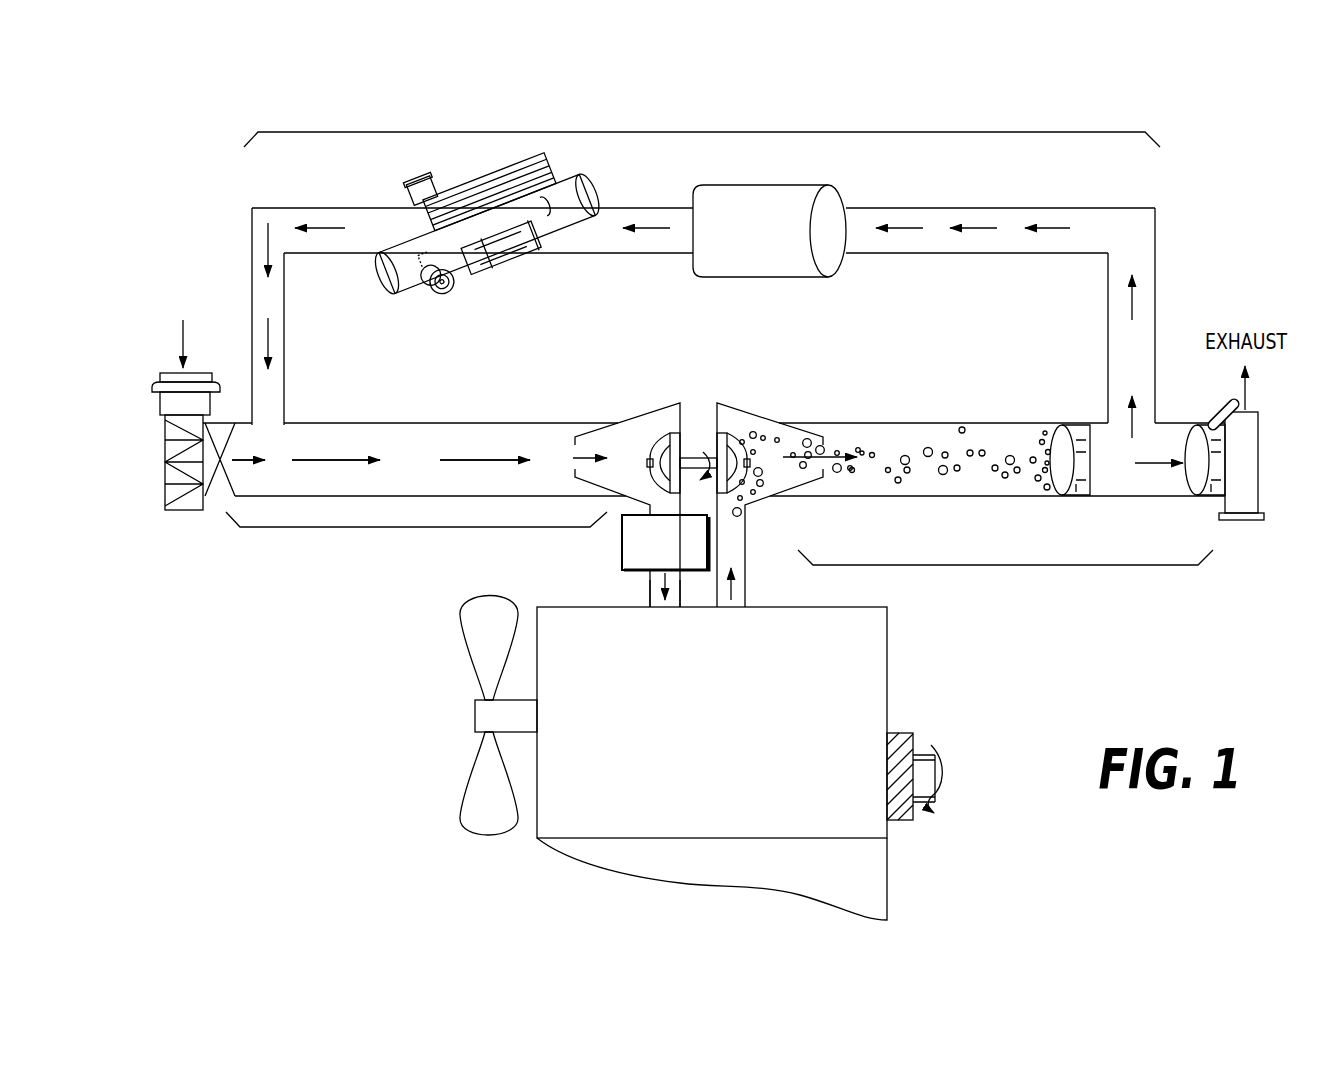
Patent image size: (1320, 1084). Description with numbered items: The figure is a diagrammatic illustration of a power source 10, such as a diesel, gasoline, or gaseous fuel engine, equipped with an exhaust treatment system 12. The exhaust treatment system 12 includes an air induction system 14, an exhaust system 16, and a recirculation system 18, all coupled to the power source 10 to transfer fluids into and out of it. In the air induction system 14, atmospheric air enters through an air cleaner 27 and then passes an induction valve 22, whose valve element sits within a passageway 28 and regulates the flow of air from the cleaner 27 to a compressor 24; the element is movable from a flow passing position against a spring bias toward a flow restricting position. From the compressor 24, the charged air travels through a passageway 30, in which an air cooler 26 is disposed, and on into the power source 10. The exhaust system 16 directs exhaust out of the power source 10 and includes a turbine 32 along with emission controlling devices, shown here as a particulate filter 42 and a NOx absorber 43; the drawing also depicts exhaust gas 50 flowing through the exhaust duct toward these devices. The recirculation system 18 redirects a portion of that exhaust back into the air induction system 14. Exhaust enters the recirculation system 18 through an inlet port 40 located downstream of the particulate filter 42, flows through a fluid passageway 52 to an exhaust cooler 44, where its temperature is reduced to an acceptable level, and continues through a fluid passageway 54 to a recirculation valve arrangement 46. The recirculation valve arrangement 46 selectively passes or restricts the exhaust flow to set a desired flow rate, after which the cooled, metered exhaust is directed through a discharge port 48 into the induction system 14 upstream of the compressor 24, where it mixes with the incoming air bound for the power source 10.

The power source 10 is at (726, 736).
The exhaust treatment system 12 is at (1188, 151).
The air induction system 14 is at (415, 530).
The exhaust system 16 is at (1022, 567).
The recirculation system 18 is at (705, 130).
The induction valve 22 is at (226, 492).
The compressor 24 is at (640, 412).
The air cooler 26 is at (621, 538).
The air cleaner 27 is at (176, 487).
The passageway 28 is at (417, 420).
The passageway 30 is at (652, 578).
The turbine 32 is at (760, 410).
The inlet port 40 is at (1112, 420).
The particulate filter 42 is at (1082, 494).
The NOx absorber 43 is at (1212, 494).
The exhaust cooler 44 is at (768, 278).
The recirculation valve arrangement 46 is at (518, 268).
The discharge port 48 is at (267, 407).
The exhaust gas with particulates 50 is at (873, 483).
The fluid passageway 52 is at (1138, 232).
The fluid passageway 54 is at (313, 243).